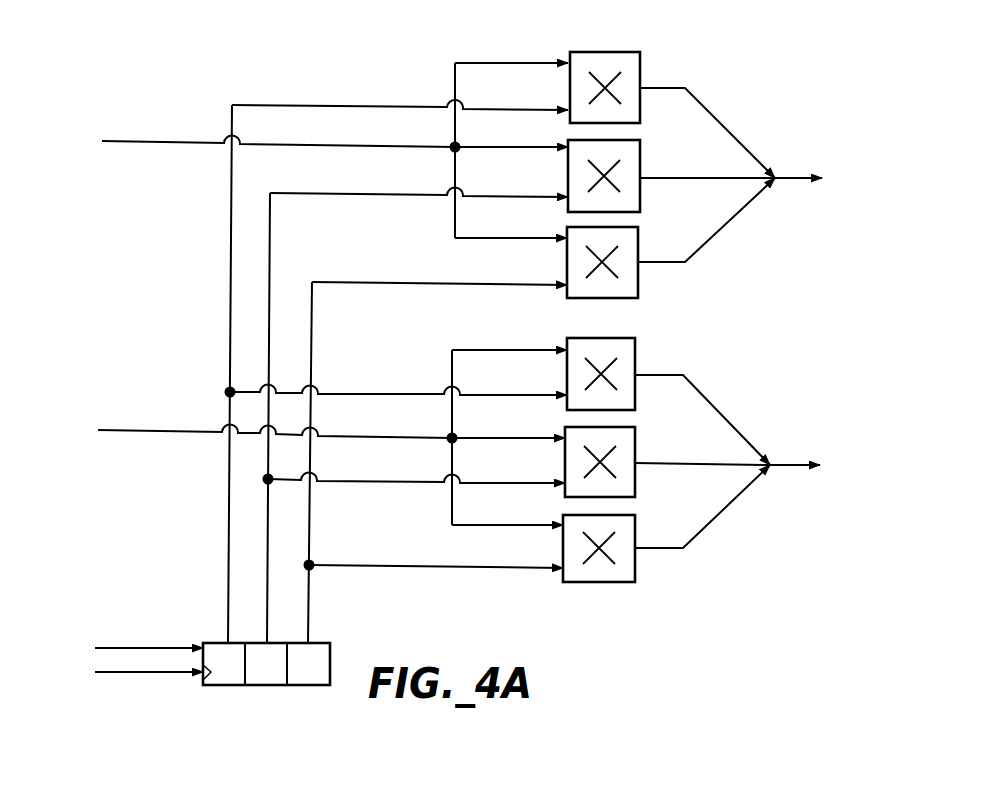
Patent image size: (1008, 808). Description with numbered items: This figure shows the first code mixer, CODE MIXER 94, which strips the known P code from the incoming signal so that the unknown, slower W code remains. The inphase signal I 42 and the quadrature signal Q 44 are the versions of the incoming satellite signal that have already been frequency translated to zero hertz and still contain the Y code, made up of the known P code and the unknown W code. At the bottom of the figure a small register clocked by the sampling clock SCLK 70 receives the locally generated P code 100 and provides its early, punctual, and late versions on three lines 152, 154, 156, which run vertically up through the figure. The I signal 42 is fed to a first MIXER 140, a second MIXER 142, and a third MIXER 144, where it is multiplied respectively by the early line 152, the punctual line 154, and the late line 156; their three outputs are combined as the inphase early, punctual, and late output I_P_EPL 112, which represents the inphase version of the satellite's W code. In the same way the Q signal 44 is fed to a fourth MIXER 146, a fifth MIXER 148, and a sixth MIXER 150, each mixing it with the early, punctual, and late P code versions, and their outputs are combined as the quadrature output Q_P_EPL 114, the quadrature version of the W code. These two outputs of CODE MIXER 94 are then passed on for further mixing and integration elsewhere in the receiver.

The I signal 42 is at (137, 141).
The Q signal 44 is at (130, 430).
The sampling clock SCLK 70 is at (167, 673).
The CODE MIXER 1 94 is at (123, 559).
The P code signal 100 is at (130, 647).
The inphase I_P_EPL output 112 is at (780, 177).
The quadrature Q_P_EPL output 114 is at (778, 464).
The multiplier 1 140 is at (570, 85).
The multiplier 2 142 is at (568, 175).
The multiplier 3 144 is at (567, 261).
The multiplier 4 146 is at (567, 373).
The multiplier 5 148 is at (565, 462).
The multiplier 6 150 is at (563, 545).
The E (early) code signal line 152 is at (231, 182).
The P (punctual) code signal line 154 is at (272, 234).
The L (late) code signal line 156 is at (313, 335).